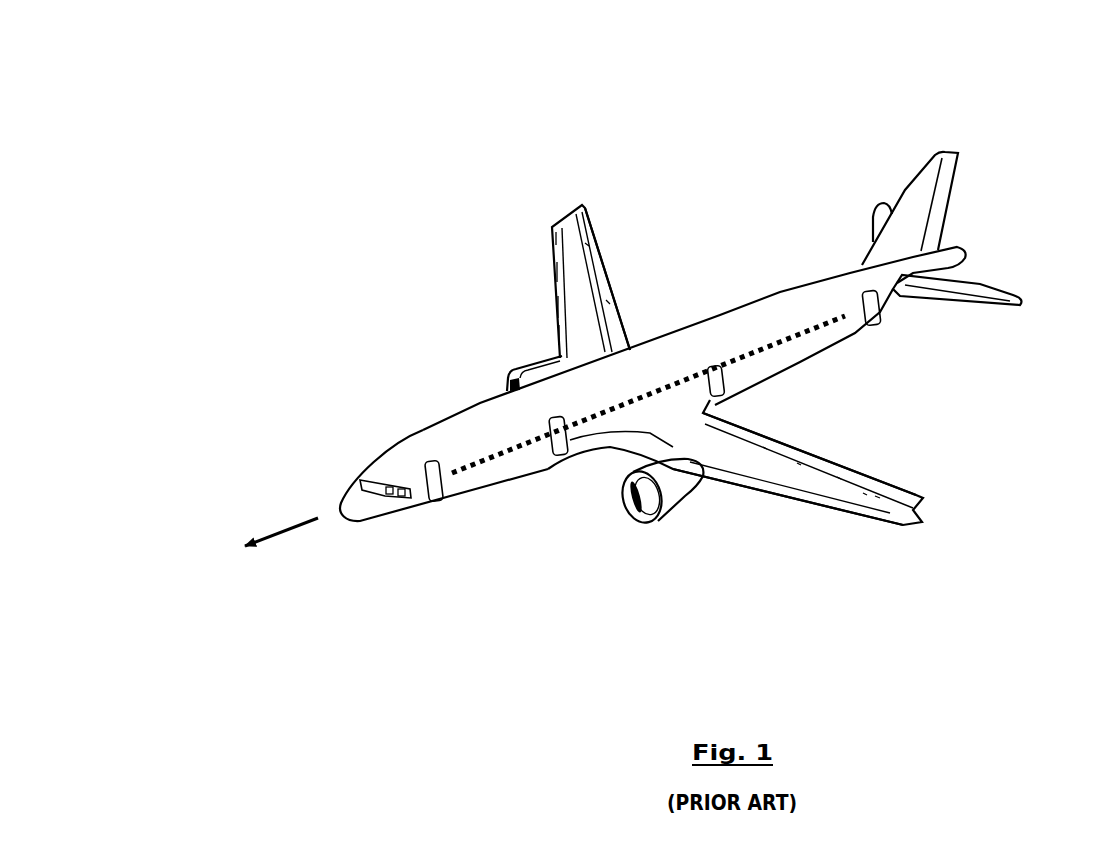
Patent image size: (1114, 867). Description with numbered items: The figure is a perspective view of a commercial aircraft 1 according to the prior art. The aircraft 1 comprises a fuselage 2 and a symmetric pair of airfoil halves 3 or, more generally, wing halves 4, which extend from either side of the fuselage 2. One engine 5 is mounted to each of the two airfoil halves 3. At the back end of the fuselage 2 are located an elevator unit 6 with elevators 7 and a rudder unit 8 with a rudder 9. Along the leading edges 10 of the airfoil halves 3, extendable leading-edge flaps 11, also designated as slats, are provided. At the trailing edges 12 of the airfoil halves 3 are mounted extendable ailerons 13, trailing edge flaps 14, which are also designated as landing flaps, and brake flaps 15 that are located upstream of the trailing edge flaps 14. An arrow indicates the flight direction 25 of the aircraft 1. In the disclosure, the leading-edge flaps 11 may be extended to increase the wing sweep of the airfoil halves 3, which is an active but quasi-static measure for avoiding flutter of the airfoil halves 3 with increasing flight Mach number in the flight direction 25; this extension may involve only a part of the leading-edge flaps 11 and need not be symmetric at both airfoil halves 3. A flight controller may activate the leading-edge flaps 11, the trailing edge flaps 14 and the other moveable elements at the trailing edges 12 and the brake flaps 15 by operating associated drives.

The aircraft 1 is at (773, 103).
The fuselage 2 is at (778, 288).
The airfoil halves 3 is at (798, 333).
The wing halves 4 is at (577, 187).
The engine 5 is at (497, 383).
The elevator unit 6 is at (1030, 302).
The elevators 7 is at (886, 204).
The rudder unit 8 is at (947, 148).
The rudder 9 is at (950, 170).
The leading edges 10 is at (549, 228).
The leading-edge flaps 11 is at (558, 355).
The trailing edges 12 is at (588, 218).
The ailerons 13 is at (587, 245).
The trailing edge flaps 14 is at (608, 302).
The brake flaps 15 is at (763, 447).
The flight direction 25 is at (302, 528).